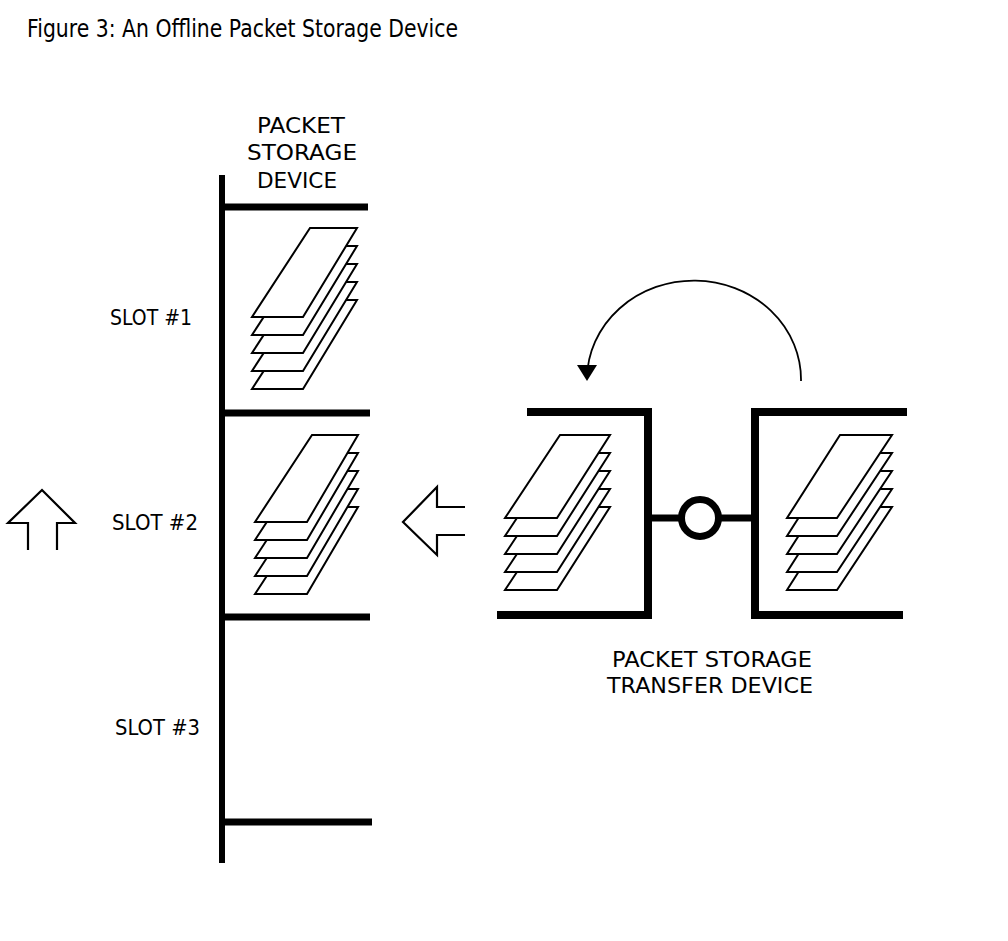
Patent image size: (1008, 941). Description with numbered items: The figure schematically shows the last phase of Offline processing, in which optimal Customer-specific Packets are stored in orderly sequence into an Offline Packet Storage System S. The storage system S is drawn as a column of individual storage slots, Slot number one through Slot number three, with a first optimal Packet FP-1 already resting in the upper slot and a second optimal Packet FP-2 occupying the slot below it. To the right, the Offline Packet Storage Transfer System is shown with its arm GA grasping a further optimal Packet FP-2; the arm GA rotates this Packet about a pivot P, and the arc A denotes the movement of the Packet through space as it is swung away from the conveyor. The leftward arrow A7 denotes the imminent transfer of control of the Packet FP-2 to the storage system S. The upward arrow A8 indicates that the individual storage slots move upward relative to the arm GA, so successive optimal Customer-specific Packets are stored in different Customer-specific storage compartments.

The Offline Packet Storage System S is at (295, 522).
The optimal Customer-specific Packet FP-1 is at (304, 308).
The optimal Customer-specific Packet FP-2 is at (573, 514).
The arm of the Offline Packet Storage Transfer System GA is at (702, 498).
The pivot P is at (701, 502).
The arc A is at (689, 316).
The leftward arrow A7 is at (434, 521).
The upward arrow A8 is at (41, 520).